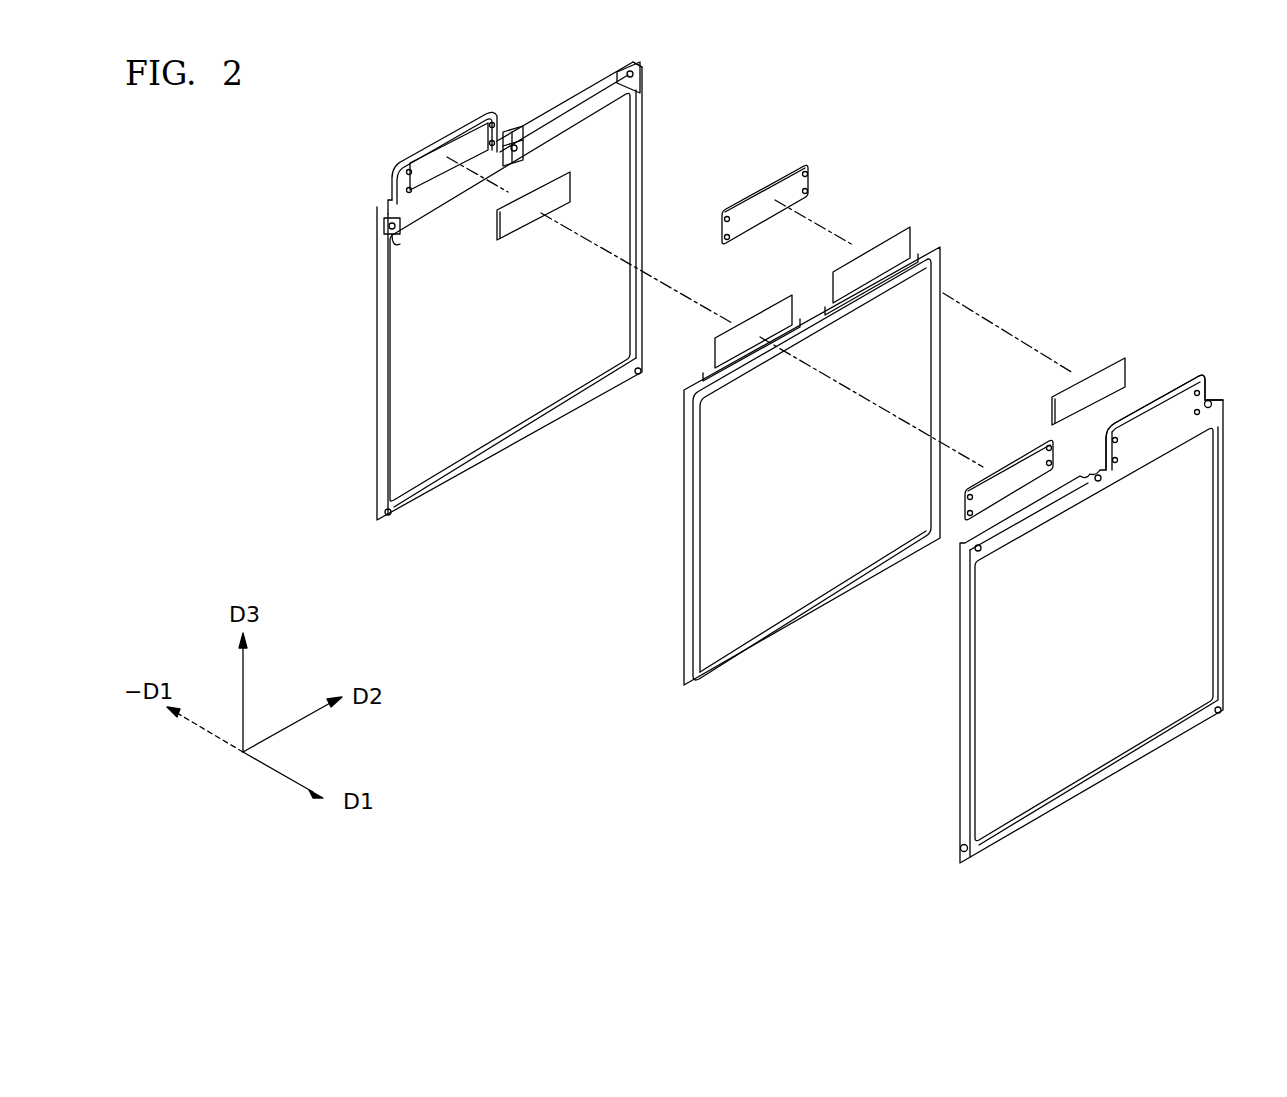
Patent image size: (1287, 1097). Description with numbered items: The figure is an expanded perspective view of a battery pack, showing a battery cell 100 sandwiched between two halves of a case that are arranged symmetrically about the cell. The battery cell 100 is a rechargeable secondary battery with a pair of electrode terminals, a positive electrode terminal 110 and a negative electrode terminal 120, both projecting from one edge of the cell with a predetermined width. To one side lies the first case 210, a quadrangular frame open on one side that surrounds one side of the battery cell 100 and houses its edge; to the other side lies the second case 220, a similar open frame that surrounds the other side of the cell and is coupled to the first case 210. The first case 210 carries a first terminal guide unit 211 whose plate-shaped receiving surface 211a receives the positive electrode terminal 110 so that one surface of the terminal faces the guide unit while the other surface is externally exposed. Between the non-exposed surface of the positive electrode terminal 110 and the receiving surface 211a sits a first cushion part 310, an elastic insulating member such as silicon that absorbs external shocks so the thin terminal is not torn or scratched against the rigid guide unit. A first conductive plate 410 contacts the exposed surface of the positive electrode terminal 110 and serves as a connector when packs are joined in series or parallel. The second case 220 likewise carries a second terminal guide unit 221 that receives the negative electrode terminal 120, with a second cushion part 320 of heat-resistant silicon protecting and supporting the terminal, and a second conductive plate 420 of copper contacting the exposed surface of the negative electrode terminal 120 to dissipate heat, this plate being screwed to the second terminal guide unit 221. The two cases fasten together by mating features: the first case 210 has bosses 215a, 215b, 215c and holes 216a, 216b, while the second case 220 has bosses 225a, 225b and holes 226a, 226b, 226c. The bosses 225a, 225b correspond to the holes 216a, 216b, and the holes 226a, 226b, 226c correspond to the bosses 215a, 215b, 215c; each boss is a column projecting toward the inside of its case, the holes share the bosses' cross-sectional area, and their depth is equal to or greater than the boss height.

The battery cell 100 is at (843, 570).
The positive electrode terminal 110 is at (770, 318).
The negative electrode terminal 120 is at (905, 240).
The first case 210 is at (383, 398).
The first terminal guide unit 211 is at (392, 182).
The receiving surface 211a is at (428, 165).
The boss 215a is at (393, 230).
The boss 215b is at (641, 376).
The boss 215c is at (525, 148).
The hole 216a is at (638, 73).
The hole 216b is at (393, 515).
The second case 220 is at (965, 757).
The second terminal guide unit 221 is at (1160, 420).
The boss 225a is at (1207, 400).
The boss 225b is at (958, 851).
The hole 226a is at (980, 549).
The hole 226b is at (1218, 713).
The hole 226c is at (1098, 480).
The first cushion part 310 is at (530, 220).
The second cushion part 320 is at (1103, 372).
The first conductive plate 410 is at (1015, 476).
The second conductive plate 420 is at (755, 218).